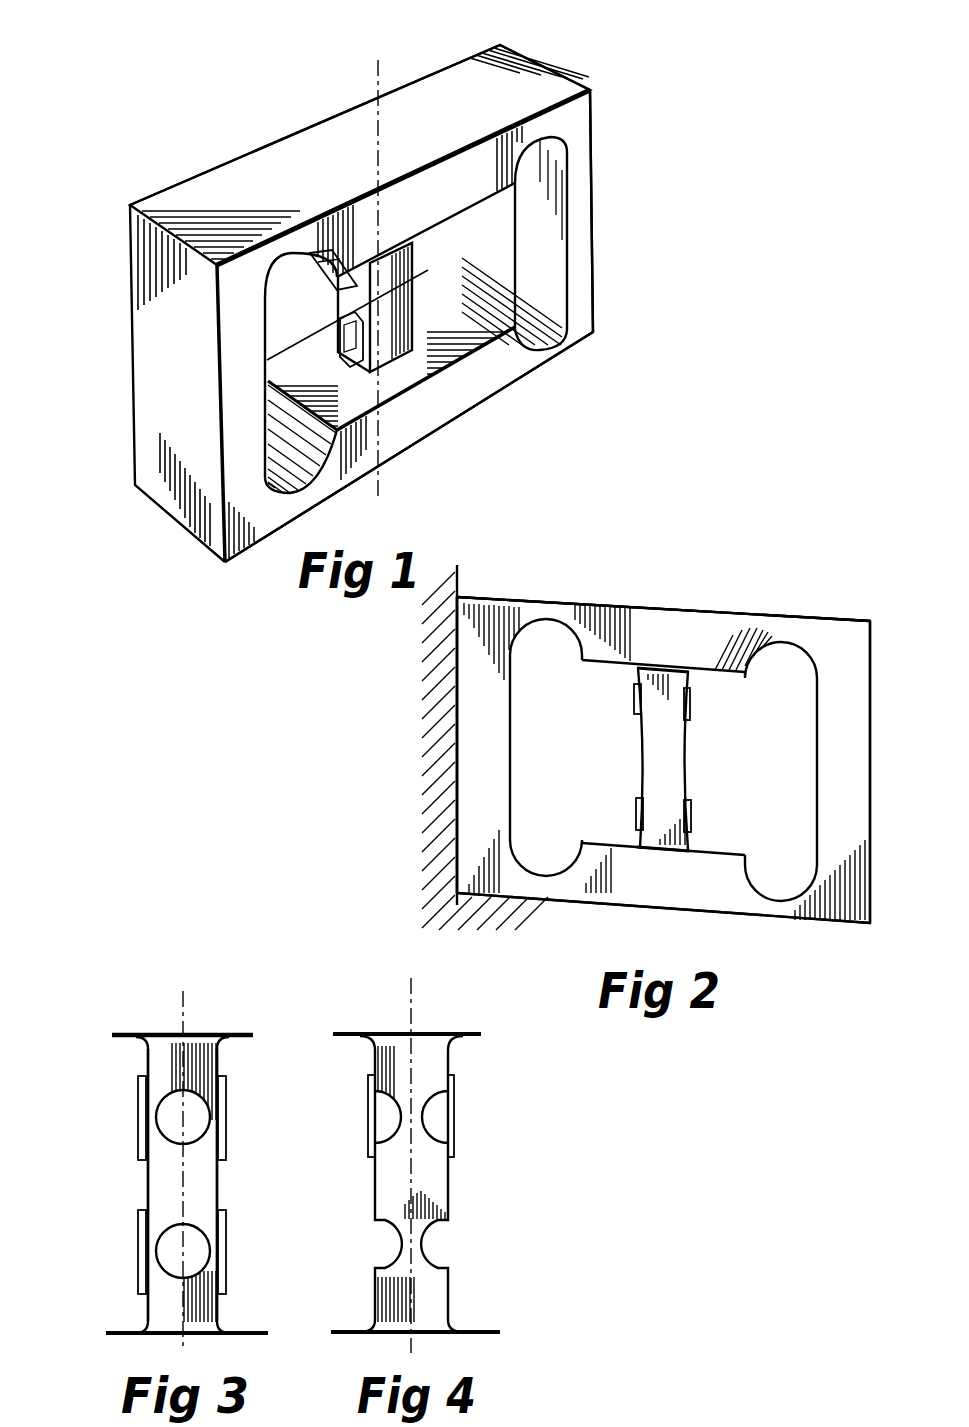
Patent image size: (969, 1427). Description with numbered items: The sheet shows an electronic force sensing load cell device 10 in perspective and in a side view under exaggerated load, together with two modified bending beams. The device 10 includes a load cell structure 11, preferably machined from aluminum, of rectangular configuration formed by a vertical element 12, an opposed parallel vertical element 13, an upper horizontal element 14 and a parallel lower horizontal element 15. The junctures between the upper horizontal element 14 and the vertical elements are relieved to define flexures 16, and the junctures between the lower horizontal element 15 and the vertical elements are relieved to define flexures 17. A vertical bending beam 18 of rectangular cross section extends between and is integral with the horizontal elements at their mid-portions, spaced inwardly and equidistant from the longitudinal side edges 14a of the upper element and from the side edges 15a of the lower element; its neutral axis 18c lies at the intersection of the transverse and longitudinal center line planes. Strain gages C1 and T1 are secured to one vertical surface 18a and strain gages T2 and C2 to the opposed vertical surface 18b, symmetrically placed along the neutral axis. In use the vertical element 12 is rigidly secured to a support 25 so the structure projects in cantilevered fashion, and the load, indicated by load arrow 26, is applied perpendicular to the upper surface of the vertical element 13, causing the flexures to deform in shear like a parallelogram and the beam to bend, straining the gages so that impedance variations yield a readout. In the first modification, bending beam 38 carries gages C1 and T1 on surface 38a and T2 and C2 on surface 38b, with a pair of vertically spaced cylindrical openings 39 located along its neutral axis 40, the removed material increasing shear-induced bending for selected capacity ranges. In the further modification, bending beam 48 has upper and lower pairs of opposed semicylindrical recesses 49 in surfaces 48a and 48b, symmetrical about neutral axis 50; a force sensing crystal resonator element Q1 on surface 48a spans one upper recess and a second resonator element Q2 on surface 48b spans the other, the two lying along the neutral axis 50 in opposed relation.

In FIG. 1, the electronic force sensing load cell device 10 is at (135, 150).
In FIG. 2, the electronic force sensing load cell device 10 is at (768, 568).
In FIG. 1, the load cell structure 11 is at (126, 204).
In FIG. 2, the load cell structure 11 is at (603, 600).
In FIG. 1, the vertical element 12 is at (175, 373).
In FIG. 2, the vertical element 12 is at (478, 720).
In FIG. 1, the vertical element 13 is at (596, 222).
In FIG. 2, the vertical element 13 is at (856, 750).
In FIG. 1, the upper horizontal element 14 is at (360, 152).
In FIG. 2, the upper horizontal element 14 is at (655, 606).
In FIG. 1, the longitudinal side edges of the upper horizontal element 14a is at (476, 189).
In FIG. 2, the longitudinal side edges of the upper horizontal element 14a is at (684, 614).
In FIG. 1, the lower horizontal element 15 is at (420, 442).
In FIG. 2, the lower horizontal element 15 is at (625, 906).
In FIG. 1, the side edges of the lower horizontal element 15a is at (432, 399).
In FIG. 2, the side edges of the lower horizontal element 15a is at (675, 906).
In FIG. 1, the flexures 16 is at (300, 240).
In FIG. 2, the flexures 16 is at (544, 600).
In FIG. 1, the flexures 17 is at (570, 340).
In FIG. 2, the flexures 17 is at (538, 902).
In FIG. 1, the vertical bending beam 18 is at (422, 266).
In FIG. 2, the vertical bending beam 18 is at (700, 752).
In FIG. 2, the vertical surface of the bending beam 18a is at (640, 735).
In FIG. 2, the opposed vertical surface of the bending beam 18b is at (692, 781).
In FIG. 1, the neutral axis of the bending beam 18c is at (380, 62).
In FIG. 2, the support 25 is at (482, 898).
In FIG. 2, the load arrow 26 is at (838, 620).
In FIG. 3, the bending beam 38 is at (135, 1165).
In FIG. 3, the vertical surface of bending beam 38 38a is at (147, 1185).
In FIG. 3, the surface of bending beam 38 38b is at (218, 1187).
In FIG. 3, the openings 39 is at (188, 1094).
In FIG. 3, the neutral axis of bending beam 38 40 is at (183, 994).
In FIG. 4, the bending beam 48 is at (452, 1180).
In FIG. 4, the surface of bending beam 48 48a is at (375, 1197).
In FIG. 4, the surface of bending beam 48 48b is at (448, 1207).
In FIG. 4, the semicylindrical recesses 49 is at (429, 1100).
In FIG. 4, the neutral axis of bending beam 48 50 is at (411, 990).
In FIG. 1, the strain gage C1 is at (338, 283).
In FIG. 2, the strain gage C1 is at (634, 699).
In FIG. 3, the strain gage C1 is at (138, 1105).
In FIG. 2, the strain gage C2 is at (692, 819).
In FIG. 3, the strain gage C2 is at (226, 1254).
In FIG. 1, the strain gage T1 is at (345, 336).
In FIG. 2, the strain gage T1 is at (636, 809).
In FIG. 3, the strain gage T1 is at (138, 1247).
In FIG. 2, the strain gage T2 is at (690, 704).
In FIG. 3, the strain gage T2 is at (226, 1104).
In FIG. 4, the force sensing crystal resonator element Q1 is at (373, 1121).
In FIG. 4, the force sensing crystal resonator element Q2 is at (453, 1107).